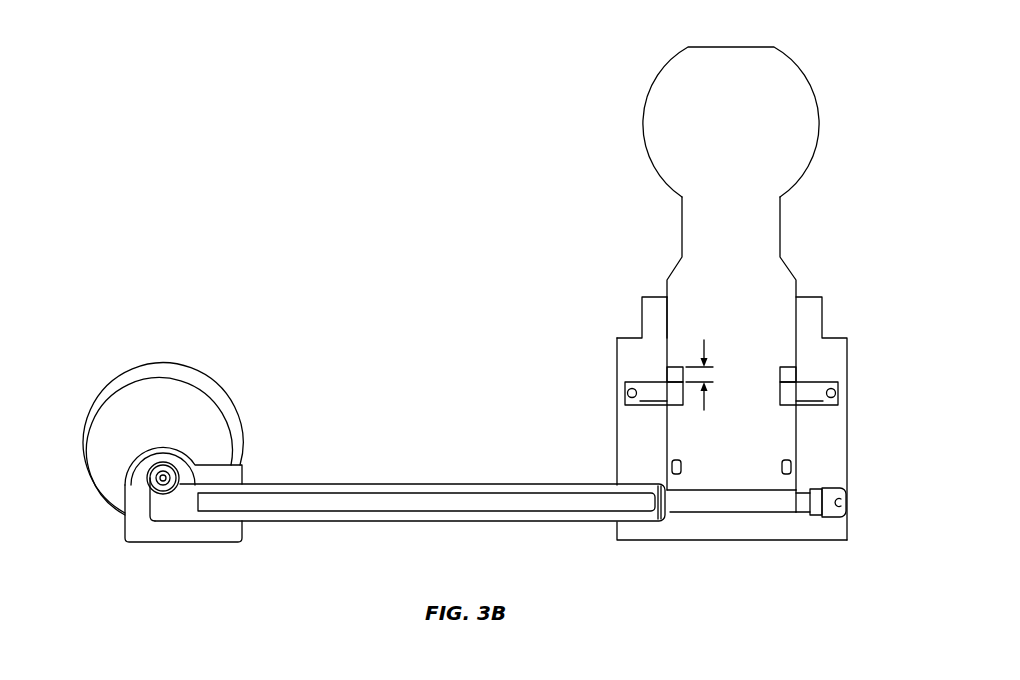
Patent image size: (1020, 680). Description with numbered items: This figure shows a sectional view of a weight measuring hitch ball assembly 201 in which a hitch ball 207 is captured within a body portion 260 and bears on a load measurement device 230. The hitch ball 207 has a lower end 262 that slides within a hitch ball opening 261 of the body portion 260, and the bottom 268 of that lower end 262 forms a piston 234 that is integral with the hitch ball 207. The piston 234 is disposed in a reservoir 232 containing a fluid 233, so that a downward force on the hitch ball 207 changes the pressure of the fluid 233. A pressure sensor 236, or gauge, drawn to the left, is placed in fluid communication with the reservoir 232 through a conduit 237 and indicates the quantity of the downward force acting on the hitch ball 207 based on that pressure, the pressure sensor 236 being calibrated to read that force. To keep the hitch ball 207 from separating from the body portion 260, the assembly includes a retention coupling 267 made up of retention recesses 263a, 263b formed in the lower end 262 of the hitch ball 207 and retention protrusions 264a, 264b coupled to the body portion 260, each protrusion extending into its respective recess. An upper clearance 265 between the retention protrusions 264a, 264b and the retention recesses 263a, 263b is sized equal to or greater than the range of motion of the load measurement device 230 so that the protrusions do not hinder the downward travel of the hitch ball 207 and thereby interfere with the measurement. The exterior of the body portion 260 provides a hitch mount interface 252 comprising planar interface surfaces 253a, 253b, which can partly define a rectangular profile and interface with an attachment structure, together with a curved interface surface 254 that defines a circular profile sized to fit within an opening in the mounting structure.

The weight measuring hitch ball assembly 201 is at (368, 84).
The hitch ball 207 is at (815, 38).
The load measurement device 230 is at (402, 346).
The reservoir 232 is at (755, 516).
The fluid 233 is at (722, 503).
The piston 234 is at (700, 485).
The pressure sensor 236 is at (118, 360).
The conduit 237 is at (434, 483).
The hitch mount interface 252 is at (614, 260).
The planar interface surface 253a is at (630, 338).
The planar interface surface 253b is at (735, 545).
The curved interface surface 254 is at (641, 318).
The body portion 260 is at (845, 311).
The hitch ball opening 261 is at (799, 288).
The lower end 262 is at (802, 256).
The retention recess 263a is at (665, 372).
The retention recess 263b is at (799, 372).
The retention protrusion 264a is at (628, 393).
The retention protrusion 264b is at (838, 395).
The upper clearance 265 is at (700, 410).
The retention coupling 267 is at (655, 335).
The bottom 268 is at (799, 489).